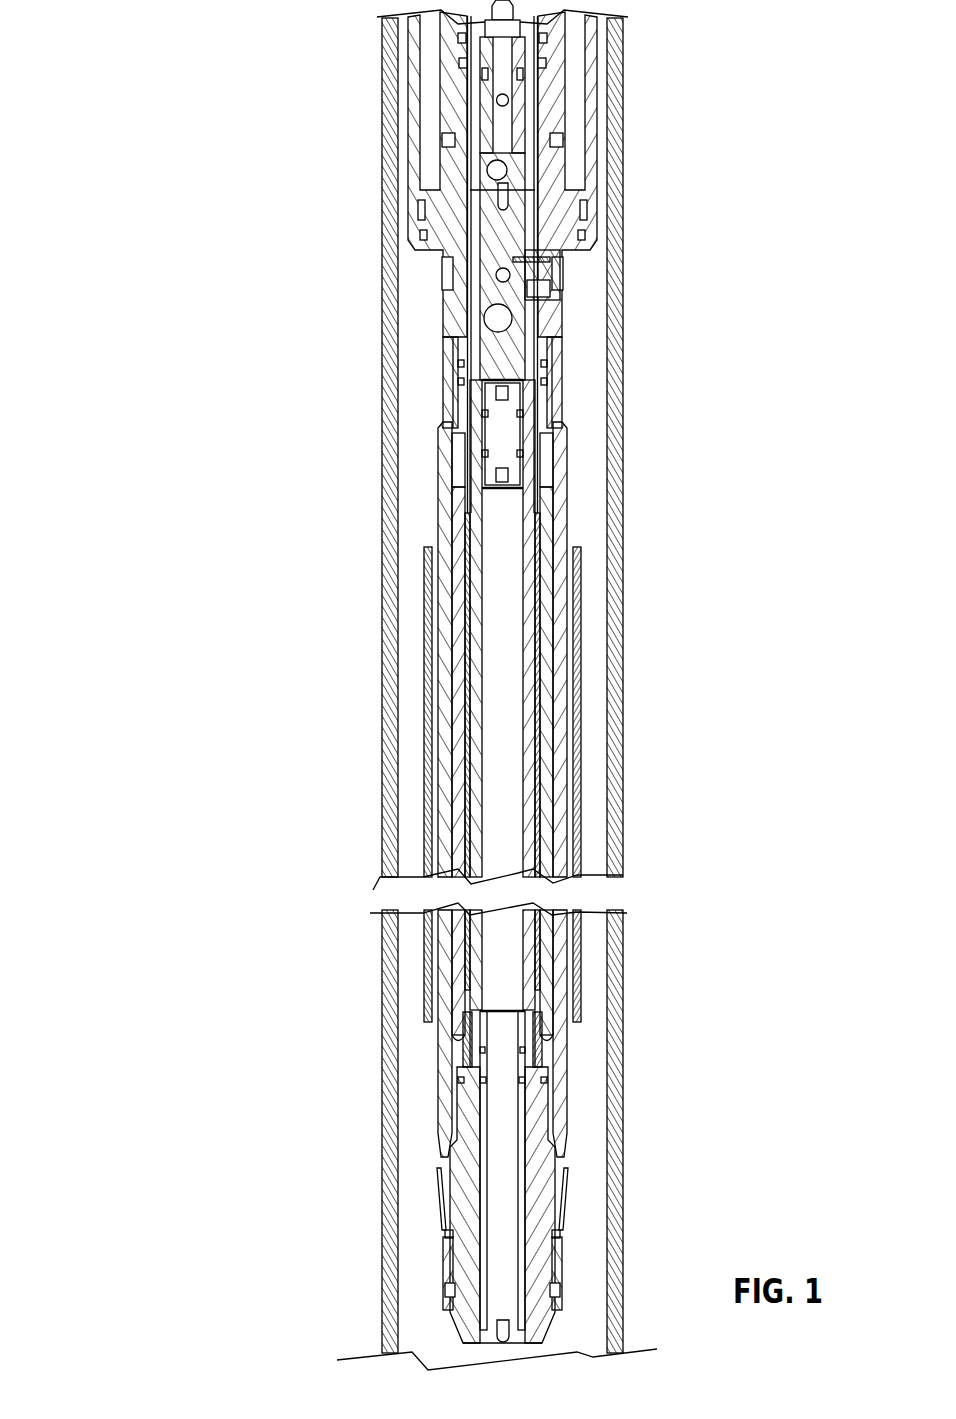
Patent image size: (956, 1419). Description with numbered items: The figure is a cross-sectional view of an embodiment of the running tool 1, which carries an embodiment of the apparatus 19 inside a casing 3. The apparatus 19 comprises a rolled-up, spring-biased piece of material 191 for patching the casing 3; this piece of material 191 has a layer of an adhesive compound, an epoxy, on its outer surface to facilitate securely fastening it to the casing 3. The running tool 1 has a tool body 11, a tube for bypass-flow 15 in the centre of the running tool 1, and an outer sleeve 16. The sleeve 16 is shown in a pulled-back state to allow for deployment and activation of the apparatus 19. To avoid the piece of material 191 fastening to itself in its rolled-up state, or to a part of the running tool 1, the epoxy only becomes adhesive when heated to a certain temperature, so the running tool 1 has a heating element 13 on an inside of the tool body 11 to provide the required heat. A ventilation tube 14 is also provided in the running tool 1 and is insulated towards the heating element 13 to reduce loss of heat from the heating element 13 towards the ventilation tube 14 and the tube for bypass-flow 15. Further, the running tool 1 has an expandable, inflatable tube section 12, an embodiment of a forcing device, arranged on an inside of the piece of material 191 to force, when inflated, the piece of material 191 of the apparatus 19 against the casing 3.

The running tool 1 is at (188, 120).
The casing 3 is at (385, 877).
The tool body 11 is at (455, 440).
The expandable, inflatable tube section 12 is at (443, 337).
The heating element 13 is at (462, 628).
The ventilation tube 14 is at (473, 688).
The tube for bypass-flow 15 is at (482, 757).
The outer sleeve 16 is at (407, 180).
The apparatus 19 is at (240, 505).
The rolled-up, spring-biased piece of material 191 is at (425, 547).